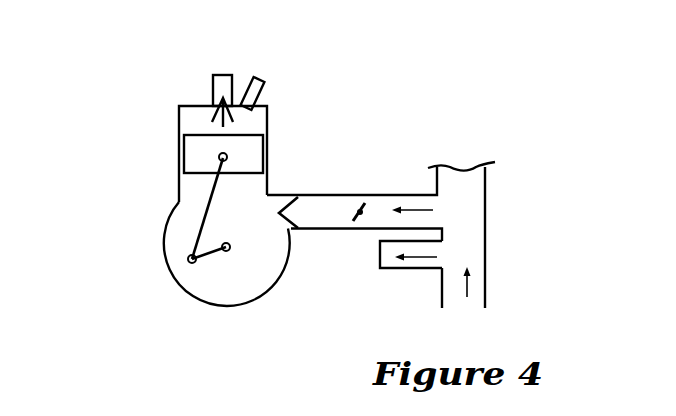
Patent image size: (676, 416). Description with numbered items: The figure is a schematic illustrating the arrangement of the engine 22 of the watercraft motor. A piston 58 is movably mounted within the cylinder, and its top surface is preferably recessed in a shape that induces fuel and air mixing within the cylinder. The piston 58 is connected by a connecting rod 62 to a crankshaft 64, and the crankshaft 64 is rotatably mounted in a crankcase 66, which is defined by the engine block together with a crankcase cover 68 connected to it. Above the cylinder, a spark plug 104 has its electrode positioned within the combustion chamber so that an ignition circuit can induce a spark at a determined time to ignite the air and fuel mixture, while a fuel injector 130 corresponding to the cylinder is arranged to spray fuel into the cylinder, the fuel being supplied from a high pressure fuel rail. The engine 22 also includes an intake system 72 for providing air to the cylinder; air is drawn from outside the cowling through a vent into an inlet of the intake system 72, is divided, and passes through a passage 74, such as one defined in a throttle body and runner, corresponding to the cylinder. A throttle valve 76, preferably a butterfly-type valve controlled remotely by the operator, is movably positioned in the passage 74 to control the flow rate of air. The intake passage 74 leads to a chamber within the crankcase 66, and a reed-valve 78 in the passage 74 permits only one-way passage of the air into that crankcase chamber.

The engine 22 is at (148, 99).
The piston 58 is at (198, 150).
The connecting rod 62 is at (210, 192).
The crankshaft 64 is at (217, 238).
The crankcase 66 is at (188, 278).
The crankcase cover 68 is at (167, 255).
The intake system 72 is at (438, 128).
The passage 74 is at (325, 229).
The throttle valve 76 is at (352, 207).
The reed-valve 78 is at (288, 194).
The spark plug 104 is at (265, 85).
The fuel injector 130 is at (213, 78).